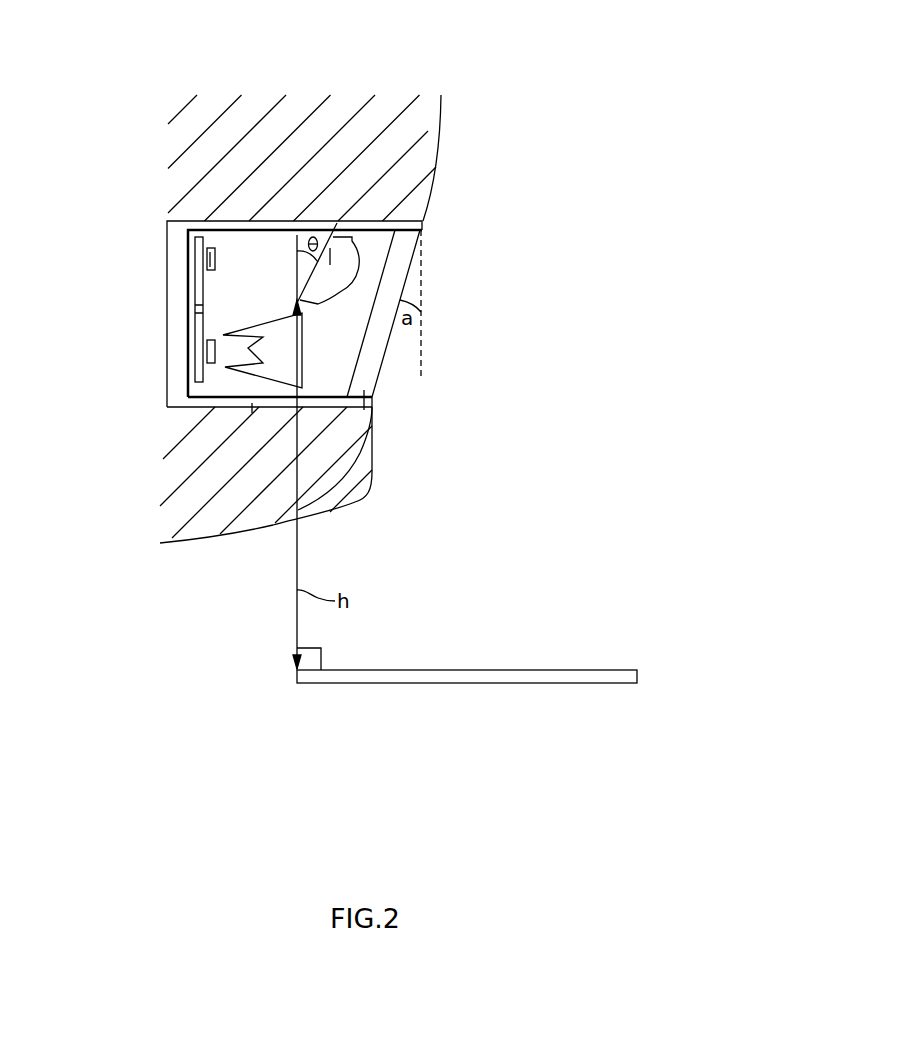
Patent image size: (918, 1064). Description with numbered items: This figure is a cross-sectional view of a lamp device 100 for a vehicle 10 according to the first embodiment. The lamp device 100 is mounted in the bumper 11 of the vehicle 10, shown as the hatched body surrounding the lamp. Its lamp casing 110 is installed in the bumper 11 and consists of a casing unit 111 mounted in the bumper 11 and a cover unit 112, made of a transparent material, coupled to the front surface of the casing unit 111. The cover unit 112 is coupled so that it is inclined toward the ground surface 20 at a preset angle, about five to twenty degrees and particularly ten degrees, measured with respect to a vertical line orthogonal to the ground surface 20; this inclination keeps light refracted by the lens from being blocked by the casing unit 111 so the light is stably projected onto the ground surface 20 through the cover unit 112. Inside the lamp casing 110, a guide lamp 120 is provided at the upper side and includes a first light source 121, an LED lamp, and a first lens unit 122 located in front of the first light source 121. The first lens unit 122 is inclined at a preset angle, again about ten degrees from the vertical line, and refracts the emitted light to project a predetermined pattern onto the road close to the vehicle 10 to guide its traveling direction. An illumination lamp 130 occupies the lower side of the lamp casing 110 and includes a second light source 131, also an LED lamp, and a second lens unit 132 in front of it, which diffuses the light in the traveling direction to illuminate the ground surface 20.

The lamp device 100 is at (562, 80).
The vehicle 10 is at (297, 251).
The bumper 11 is at (358, 488).
The ground surface 20 is at (520, 683).
The lamp casing 110 is at (275, 598).
The casing unit 111 is at (252, 403).
The cover unit 112 is at (298, 510).
The guide lamp 120 is at (358, 146).
The first light source 121 is at (210, 248).
The first lens unit 122 is at (337, 223).
The illumination lamp 130 is at (85, 354).
The second light source 131 is at (200, 360).
The second lens unit 132 is at (227, 367).